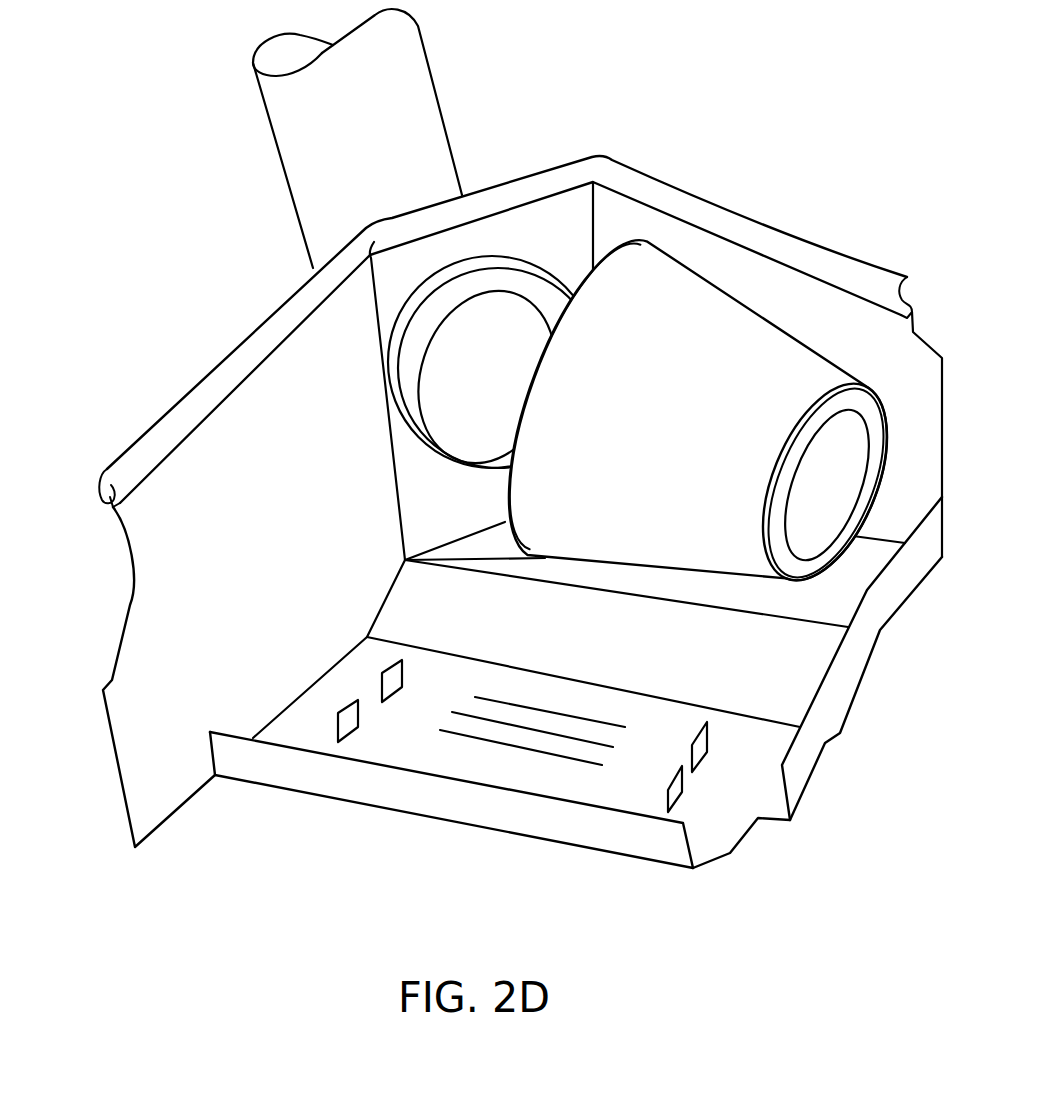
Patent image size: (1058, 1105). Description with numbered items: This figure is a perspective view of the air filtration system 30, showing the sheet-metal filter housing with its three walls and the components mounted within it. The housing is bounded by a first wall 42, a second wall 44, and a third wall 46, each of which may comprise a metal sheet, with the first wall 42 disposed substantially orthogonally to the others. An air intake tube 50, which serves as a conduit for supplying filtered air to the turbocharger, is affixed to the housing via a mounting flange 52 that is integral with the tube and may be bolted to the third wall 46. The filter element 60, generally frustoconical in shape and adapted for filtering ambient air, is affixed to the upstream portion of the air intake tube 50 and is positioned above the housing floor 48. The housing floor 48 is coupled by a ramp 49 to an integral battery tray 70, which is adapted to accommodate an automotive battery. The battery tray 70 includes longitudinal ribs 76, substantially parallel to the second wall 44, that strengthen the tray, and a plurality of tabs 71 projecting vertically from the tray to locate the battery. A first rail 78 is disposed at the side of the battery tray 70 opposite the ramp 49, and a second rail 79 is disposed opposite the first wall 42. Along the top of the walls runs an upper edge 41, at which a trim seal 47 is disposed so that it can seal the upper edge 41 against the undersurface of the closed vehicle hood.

The air filtration system 30 is at (798, 122).
The upper edge 41 is at (913, 300).
The first wall 42 is at (260, 573).
The second wall 44 is at (887, 355).
The third wall 46 is at (578, 246).
The trim seal 47 is at (98, 472).
The housing floor 48 is at (846, 613).
The ramp 49 is at (718, 666).
The air intake tube 50 is at (380, 151).
The mounting flange 52 is at (434, 330).
The filter element 60 is at (688, 445).
The battery tray 70 is at (663, 765).
The tabs 71 is at (403, 675).
The ribs 76 is at (466, 712).
The first rail 78 is at (575, 843).
The second rail 79 is at (862, 667).